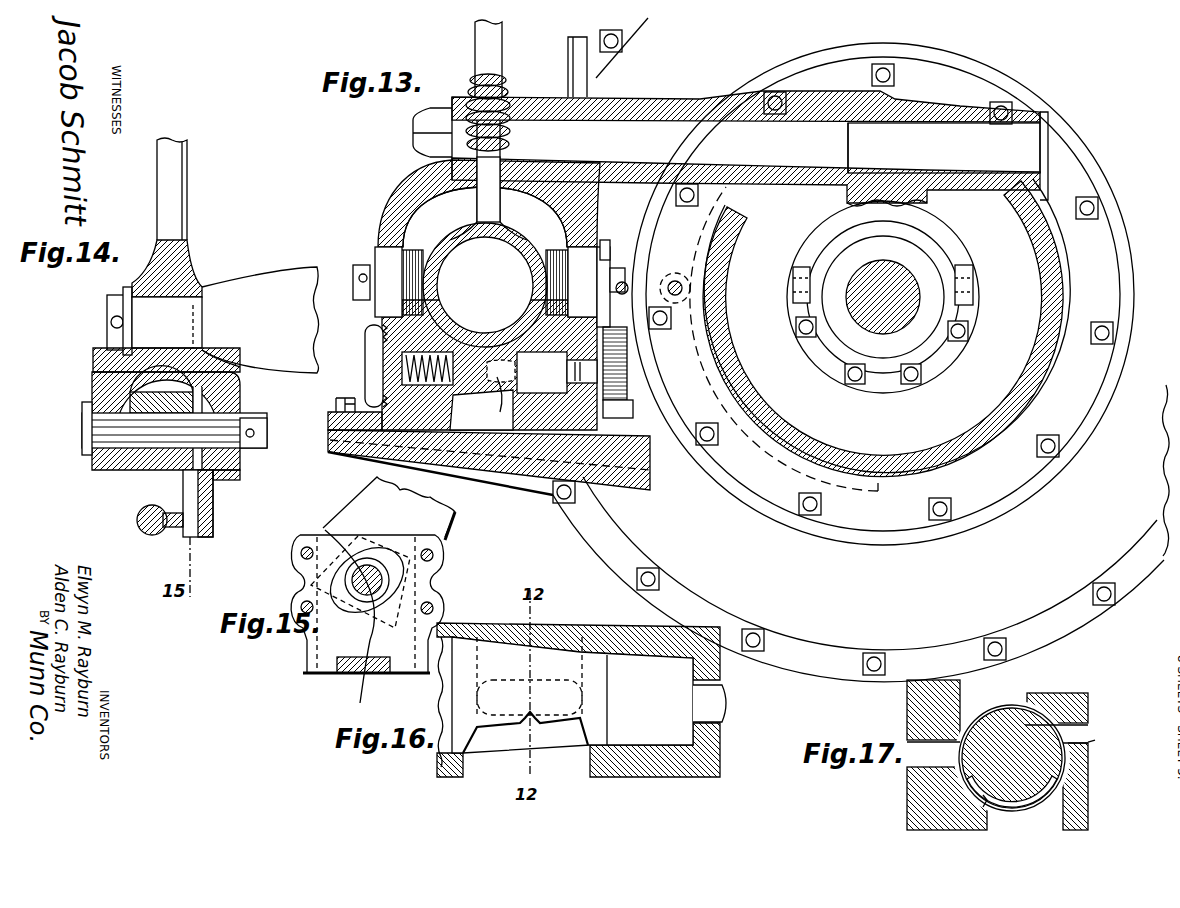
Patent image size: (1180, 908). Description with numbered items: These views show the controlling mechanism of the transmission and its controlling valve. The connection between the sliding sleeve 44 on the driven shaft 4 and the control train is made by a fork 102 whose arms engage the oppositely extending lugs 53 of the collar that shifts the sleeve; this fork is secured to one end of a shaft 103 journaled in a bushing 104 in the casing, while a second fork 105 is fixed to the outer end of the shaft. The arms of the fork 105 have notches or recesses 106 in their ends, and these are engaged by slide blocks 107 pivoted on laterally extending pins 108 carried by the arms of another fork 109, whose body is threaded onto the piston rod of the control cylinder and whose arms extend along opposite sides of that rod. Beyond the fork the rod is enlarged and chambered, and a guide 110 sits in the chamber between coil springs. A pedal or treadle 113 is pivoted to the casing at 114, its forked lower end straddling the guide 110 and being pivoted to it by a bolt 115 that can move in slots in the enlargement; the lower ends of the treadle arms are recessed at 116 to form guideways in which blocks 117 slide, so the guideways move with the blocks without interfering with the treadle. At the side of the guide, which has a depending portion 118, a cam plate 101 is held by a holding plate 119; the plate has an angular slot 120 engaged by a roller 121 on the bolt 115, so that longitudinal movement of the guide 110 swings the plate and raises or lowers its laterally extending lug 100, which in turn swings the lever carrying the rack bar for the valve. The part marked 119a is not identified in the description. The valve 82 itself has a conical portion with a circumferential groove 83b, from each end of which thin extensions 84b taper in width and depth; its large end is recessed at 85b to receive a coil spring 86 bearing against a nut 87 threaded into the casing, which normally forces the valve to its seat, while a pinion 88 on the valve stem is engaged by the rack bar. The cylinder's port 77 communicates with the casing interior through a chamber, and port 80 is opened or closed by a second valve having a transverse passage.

In FIG. 13, the driven shaft 4 is at (850, 323).
In FIG. 13, the sleeve 44 is at (888, 350).
In FIG. 13, the lugs 53 is at (790, 302).
In FIG. 13, the port 77 is at (861, 350).
In FIG. 17, the port 77 is at (1082, 735).
In FIG. 17, the port 80 is at (923, 753).
In FIG. 13, the valve 82 is at (542, 372).
In FIG. 16, the valve 82 is at (666, 700).
In FIG. 17, the valve 82 is at (1035, 713).
In FIG. 13, the groove 83b is at (493, 377).
In FIG. 16, the groove 83b is at (500, 735).
In FIG. 17, the groove 83b is at (1043, 787).
In FIG. 16, the thin extensions 84b is at (521, 709).
In FIG. 17, the thin extensions 84b is at (1067, 763).
In FIG. 13, the recess 85b is at (423, 385).
In FIG. 13, the coil spring 86 is at (456, 404).
In FIG. 13, the nut 87 is at (380, 368).
In FIG. 13, the pinion 88 is at (603, 470).
In FIG. 14, the lug 100 is at (152, 532).
In FIG. 14, the cam plate 101 is at (198, 537).
In FIG. 15, the cam plate 101 is at (330, 673).
In FIG. 13, the fork 102 is at (930, 210).
In FIG. 13, the shaft 103 is at (1007, 143).
In FIG. 13, the bushing 104 is at (665, 95).
In FIG. 13, the second fork 105 is at (392, 178).
In FIG. 13, the notches 106 is at (377, 230).
In FIG. 13, the slide blocks 107 is at (392, 260).
In FIG. 13, the pins 108 is at (383, 342).
In FIG. 13, the fork 109 is at (430, 229).
In FIG. 14, the guide 110 is at (123, 470).
In FIG. 14, the treadle 113 is at (170, 216).
In FIG. 14, the pivot 114 is at (113, 300).
In FIG. 14, the bolt 115 is at (90, 430).
In FIG. 14, the recesses 116 is at (100, 393).
In FIG. 15, the recesses 116 is at (413, 537).
In FIG. 14, the blocks 117 is at (92, 462).
In FIG. 15, the blocks 117 is at (403, 587).
In FIG. 14, the depending portion 118 is at (180, 488).
In FIG. 14, the holding plate 119 is at (213, 527).
In FIG. 14, the arch 119a is at (163, 381).
In FIG. 14, the angular slot 120 is at (213, 495).
In FIG. 15, the angular slot 120 is at (335, 525).
In FIG. 14, the roller 121 is at (223, 397).
In FIG. 15, the roller 121 is at (360, 673).